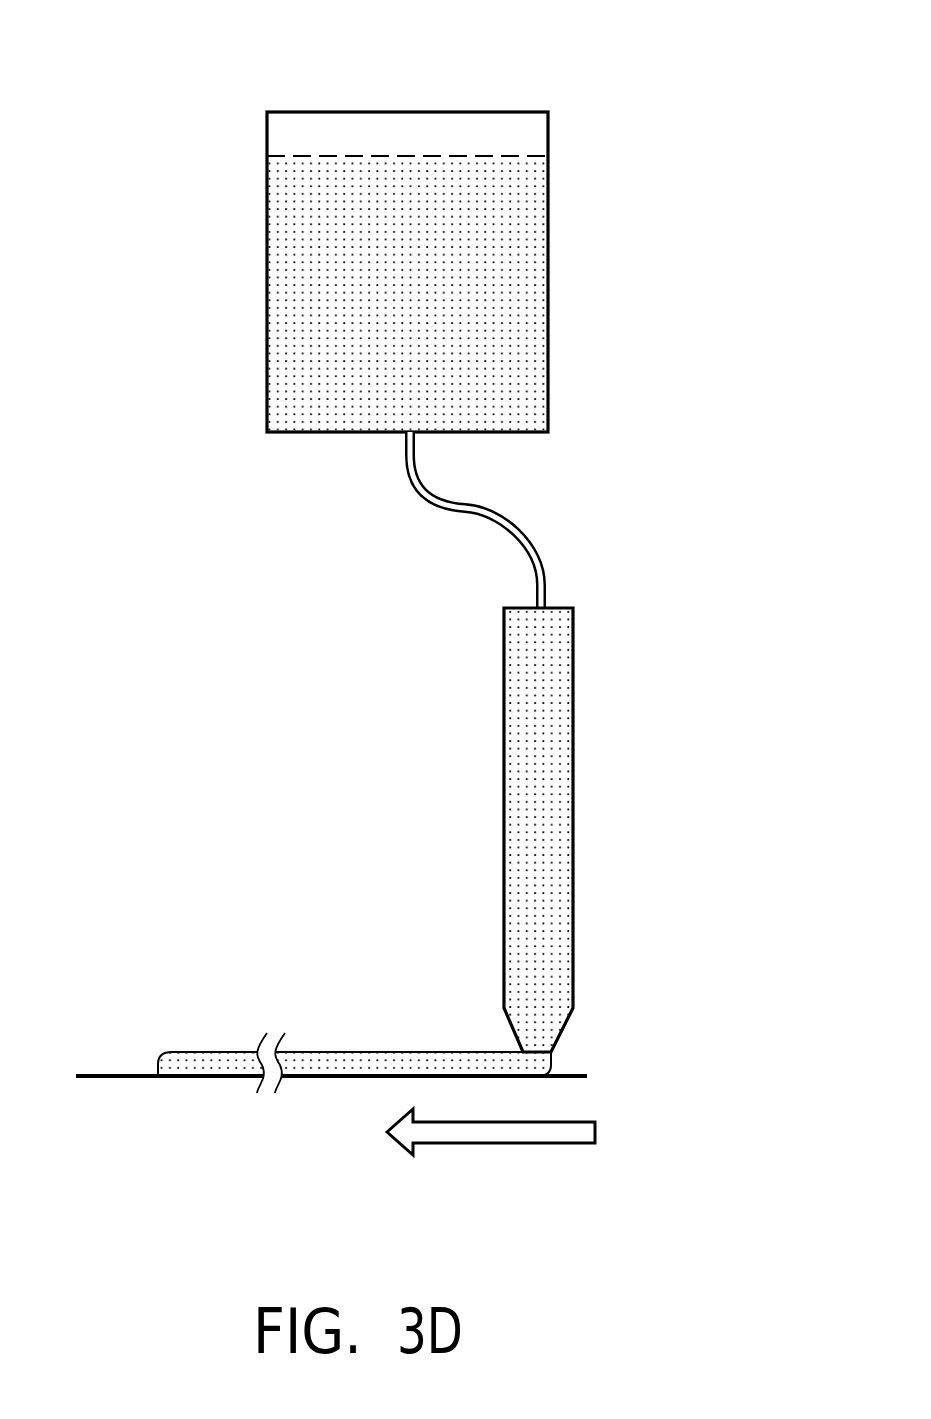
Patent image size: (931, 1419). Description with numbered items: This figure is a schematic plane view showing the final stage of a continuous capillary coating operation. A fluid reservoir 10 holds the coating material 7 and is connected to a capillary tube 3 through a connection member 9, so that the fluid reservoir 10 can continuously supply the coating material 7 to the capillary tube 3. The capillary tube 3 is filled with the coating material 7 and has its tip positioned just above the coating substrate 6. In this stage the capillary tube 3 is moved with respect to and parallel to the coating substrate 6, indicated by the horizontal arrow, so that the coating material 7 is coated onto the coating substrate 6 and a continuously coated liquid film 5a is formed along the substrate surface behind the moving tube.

The fluid reservoir 10 is at (408, 111).
The connection member 9 is at (508, 516).
The capillary tube 3 is at (536, 830).
The coating material 7 is at (522, 722).
The continuously coated liquid film 5a is at (371, 1052).
The coating substrate 6 is at (114, 1076).